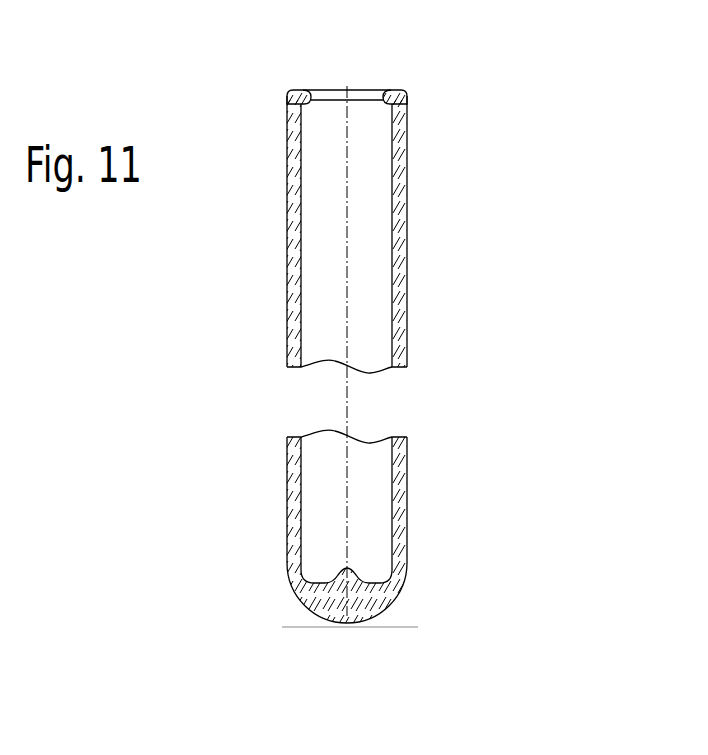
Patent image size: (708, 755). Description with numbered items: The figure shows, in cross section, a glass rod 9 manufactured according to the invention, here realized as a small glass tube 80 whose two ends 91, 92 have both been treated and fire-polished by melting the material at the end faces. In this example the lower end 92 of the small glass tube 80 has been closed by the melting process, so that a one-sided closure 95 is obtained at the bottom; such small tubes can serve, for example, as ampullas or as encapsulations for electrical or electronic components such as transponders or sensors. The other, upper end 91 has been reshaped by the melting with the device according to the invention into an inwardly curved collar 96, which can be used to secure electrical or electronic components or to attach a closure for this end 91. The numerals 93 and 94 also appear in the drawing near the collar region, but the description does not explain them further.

The glass rod 9 is at (362, 315).
The glass tube 80 is at (243, 306).
The end 91 is at (405, 115).
The end 92 is at (400, 550).
The bead 93 is at (397, 90).
The rotor holder 94 is at (10, 0).
The one-sided closure 95 is at (335, 600).
The inwardly curved collar 96 is at (308, 98).